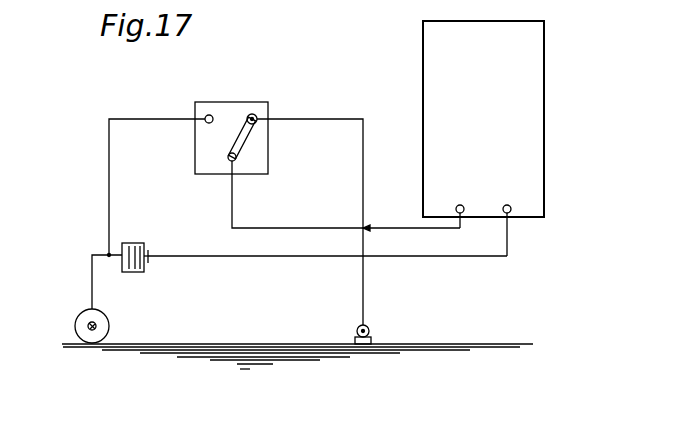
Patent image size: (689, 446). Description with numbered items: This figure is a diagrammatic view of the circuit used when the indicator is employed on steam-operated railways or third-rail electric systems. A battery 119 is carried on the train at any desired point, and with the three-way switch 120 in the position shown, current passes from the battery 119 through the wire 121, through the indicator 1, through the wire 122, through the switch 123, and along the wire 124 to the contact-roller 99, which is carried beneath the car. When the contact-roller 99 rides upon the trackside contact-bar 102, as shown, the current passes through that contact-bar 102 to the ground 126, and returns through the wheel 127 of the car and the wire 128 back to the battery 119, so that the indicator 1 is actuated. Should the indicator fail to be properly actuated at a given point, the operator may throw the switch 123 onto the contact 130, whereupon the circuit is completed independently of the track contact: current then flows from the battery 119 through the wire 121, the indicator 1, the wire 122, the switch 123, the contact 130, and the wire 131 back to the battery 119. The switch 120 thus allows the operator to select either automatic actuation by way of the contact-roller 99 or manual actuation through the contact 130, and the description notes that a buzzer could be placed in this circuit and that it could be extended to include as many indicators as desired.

The indicator 1 is at (483, 138).
The contact-roller 99 is at (369, 331).
The contact-bar 102 is at (364, 345).
The battery 119 is at (135, 243).
The three-way switch 120 is at (241, 110).
The wire 121 is at (259, 257).
The wire 122 is at (311, 228).
The switch 123 is at (250, 138).
The wire 124 is at (365, 186).
The ground 126 is at (297, 363).
The wheel 127 is at (109, 323).
The wire 128 is at (92, 279).
The contact 130 is at (210, 115).
The wire 131 is at (109, 183).